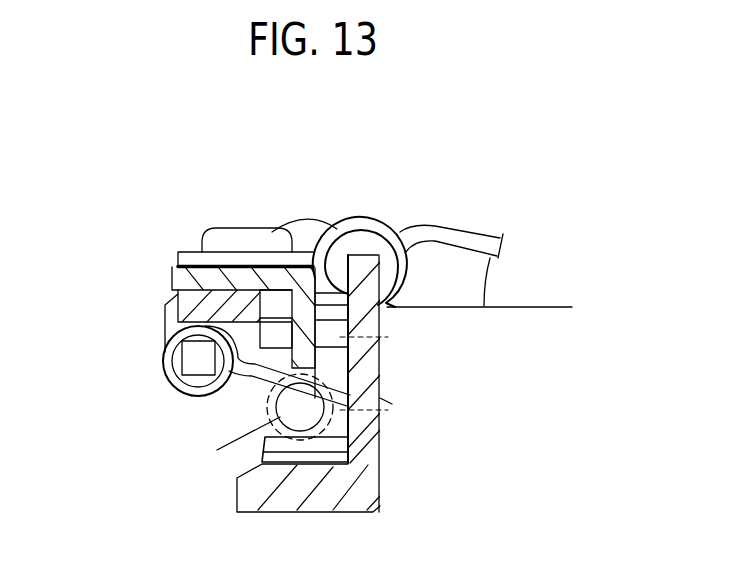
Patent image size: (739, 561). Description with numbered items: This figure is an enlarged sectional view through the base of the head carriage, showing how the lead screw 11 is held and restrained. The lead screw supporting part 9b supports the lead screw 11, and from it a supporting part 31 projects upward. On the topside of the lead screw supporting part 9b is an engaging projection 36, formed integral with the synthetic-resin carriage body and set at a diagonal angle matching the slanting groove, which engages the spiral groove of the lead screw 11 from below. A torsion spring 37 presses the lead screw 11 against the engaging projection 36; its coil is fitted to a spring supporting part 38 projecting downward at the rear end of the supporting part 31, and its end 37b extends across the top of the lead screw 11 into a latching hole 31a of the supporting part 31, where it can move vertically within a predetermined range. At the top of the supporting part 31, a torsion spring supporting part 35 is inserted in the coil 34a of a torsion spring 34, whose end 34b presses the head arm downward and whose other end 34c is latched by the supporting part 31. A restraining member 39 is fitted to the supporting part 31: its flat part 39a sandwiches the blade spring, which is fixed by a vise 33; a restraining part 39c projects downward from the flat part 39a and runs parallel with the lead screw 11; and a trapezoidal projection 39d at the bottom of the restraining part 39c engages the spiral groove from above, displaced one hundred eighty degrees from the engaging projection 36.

The lead screw supporting part 9b is at (255, 495).
The lead screw 11 is at (214, 452).
The supporting part 31 is at (380, 343).
The latching hole 31a is at (360, 400).
The vise 33 is at (243, 228).
The torsion spring 34 is at (393, 222).
The coil 34a is at (352, 225).
The end 34b is at (467, 237).
The other end 34c is at (237, 253).
The torsion spring supporting part 35 is at (366, 268).
The engaging projection 36 is at (352, 445).
The torsion spring 37 is at (194, 395).
The end 37b is at (380, 386).
The spring supporting part 38 is at (193, 355).
The restraining member 39 is at (178, 280).
The flat part 39a is at (205, 258).
The restraining part 39c is at (390, 312).
The projection 39d is at (380, 371).